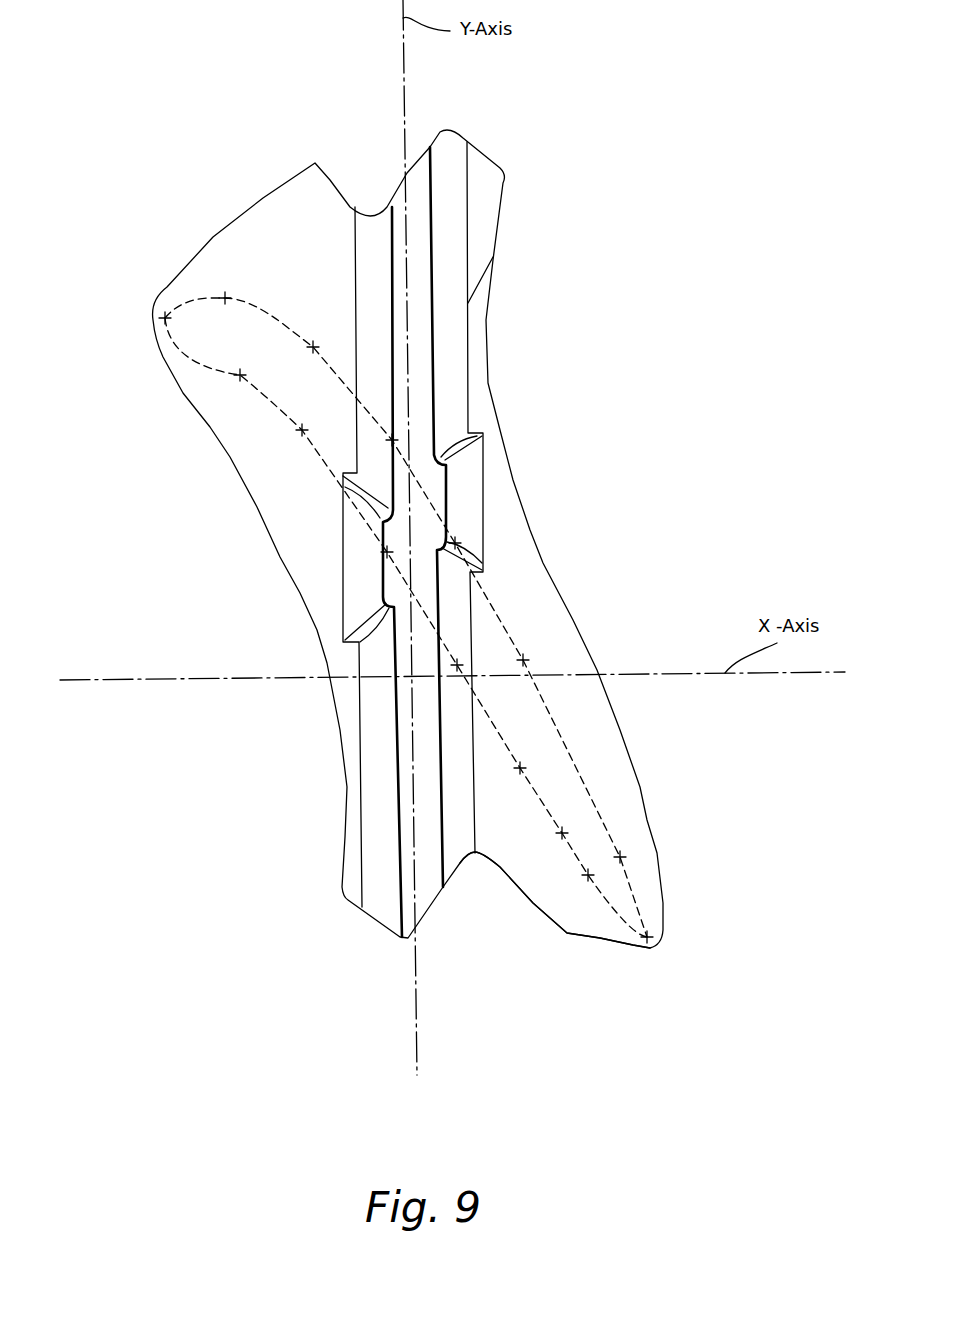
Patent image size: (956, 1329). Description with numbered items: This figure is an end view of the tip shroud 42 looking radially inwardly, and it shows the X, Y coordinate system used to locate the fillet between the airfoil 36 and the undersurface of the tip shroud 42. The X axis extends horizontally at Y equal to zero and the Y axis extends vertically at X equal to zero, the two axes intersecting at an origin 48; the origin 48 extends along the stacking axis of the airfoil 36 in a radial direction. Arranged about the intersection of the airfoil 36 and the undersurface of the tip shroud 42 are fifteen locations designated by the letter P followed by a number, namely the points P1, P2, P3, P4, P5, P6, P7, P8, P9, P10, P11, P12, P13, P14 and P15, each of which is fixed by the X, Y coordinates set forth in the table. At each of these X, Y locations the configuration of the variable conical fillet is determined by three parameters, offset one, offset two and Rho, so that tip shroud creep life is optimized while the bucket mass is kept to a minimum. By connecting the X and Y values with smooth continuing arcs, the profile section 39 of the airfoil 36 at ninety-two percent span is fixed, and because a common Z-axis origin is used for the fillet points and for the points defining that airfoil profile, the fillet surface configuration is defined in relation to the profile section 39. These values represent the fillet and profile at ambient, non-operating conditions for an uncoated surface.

The fillet point P1 is at (165, 318).
The fillet point P2 is at (240, 375).
The fillet point P3 is at (302, 430).
The fillet point P4 is at (387, 552).
The fillet point P5 is at (457, 665).
The fillet point P6 is at (520, 768).
The fillet point P7 is at (562, 833).
The fillet point P8 is at (588, 877).
The fillet point P9 is at (647, 937).
The fillet point P10 is at (225, 298).
The fillet point P11 is at (313, 347).
The fillet point P12 is at (392, 440).
The fillet point P13 is at (455, 543).
The fillet point P14 is at (523, 660).
The fillet point P15 is at (620, 857).
The airfoil 36 is at (208, 367).
The profile section 39 is at (497, 605).
The tip shroud 42 is at (550, 863).
The origin 48 is at (408, 678).